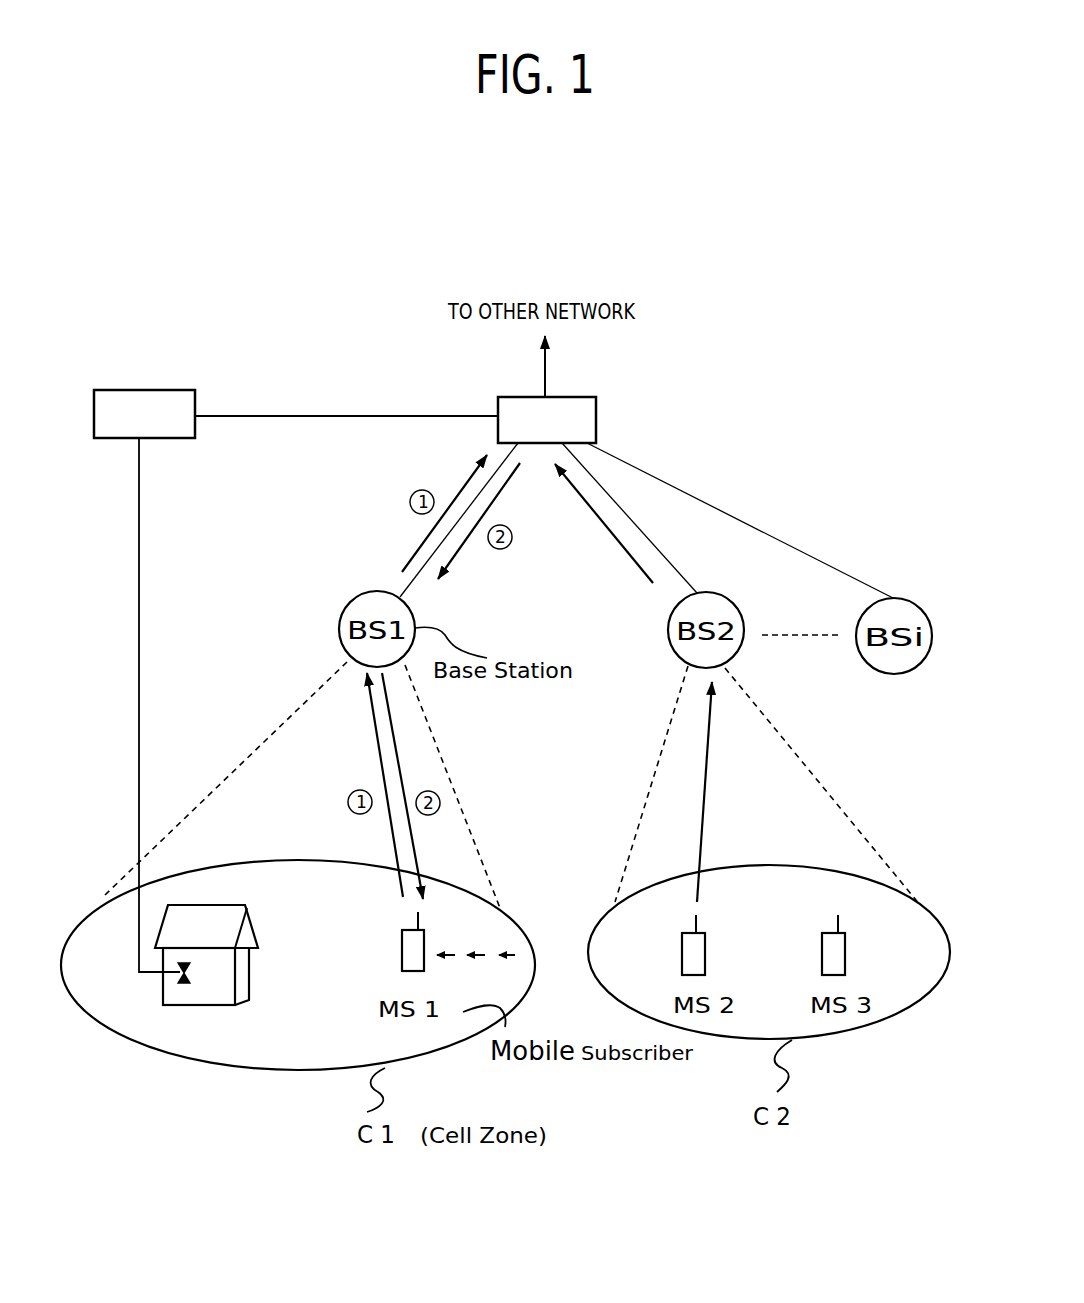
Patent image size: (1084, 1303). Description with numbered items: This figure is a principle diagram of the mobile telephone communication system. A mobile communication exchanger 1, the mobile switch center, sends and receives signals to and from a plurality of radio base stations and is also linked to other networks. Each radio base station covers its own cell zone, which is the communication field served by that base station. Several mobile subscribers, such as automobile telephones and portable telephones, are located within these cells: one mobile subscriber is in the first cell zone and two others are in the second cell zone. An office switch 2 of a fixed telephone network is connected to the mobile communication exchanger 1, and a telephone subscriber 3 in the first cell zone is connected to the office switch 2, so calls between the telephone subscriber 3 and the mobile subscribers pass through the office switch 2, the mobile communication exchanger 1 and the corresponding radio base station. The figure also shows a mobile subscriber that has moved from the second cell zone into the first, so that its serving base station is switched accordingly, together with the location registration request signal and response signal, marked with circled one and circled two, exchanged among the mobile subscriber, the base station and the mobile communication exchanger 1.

The mobile communication exchanger 1 is at (596, 432).
The office switch 2 is at (155, 390).
The telephone subscriber 3 is at (195, 1005).